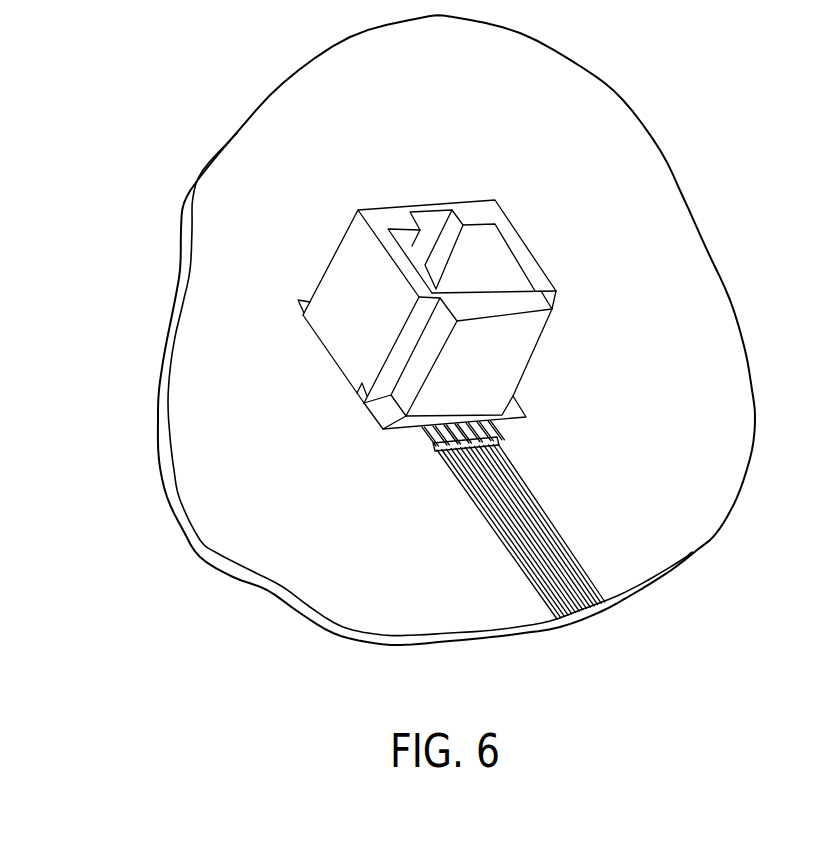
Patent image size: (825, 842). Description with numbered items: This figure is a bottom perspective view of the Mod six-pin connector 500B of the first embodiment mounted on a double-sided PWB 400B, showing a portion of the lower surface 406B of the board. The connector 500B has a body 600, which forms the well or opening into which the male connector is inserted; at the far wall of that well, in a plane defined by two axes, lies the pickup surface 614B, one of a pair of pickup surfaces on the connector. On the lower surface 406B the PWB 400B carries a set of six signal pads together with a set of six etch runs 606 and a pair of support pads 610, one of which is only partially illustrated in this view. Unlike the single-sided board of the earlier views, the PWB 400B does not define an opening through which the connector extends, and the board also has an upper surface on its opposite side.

The double-sided PWB 400B is at (627, 97).
The lower surface 406B is at (312, 508).
The Mod 6-pin connector 500B is at (442, 284).
The body 600 is at (390, 208).
The pickup surface 614B is at (508, 273).
The support pads 610 is at (300, 304).
The etch runs 606 is at (478, 512).